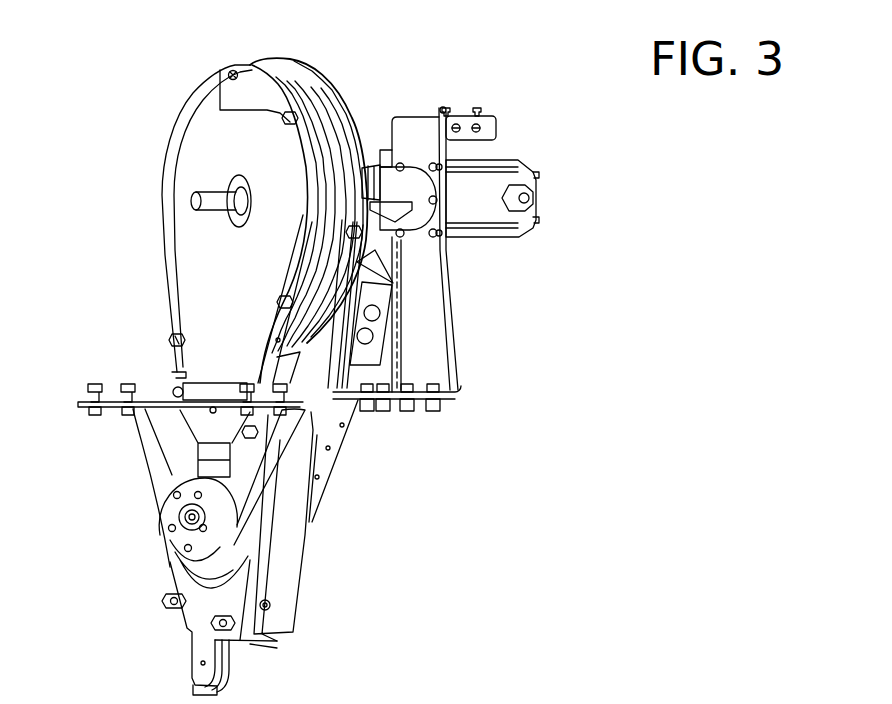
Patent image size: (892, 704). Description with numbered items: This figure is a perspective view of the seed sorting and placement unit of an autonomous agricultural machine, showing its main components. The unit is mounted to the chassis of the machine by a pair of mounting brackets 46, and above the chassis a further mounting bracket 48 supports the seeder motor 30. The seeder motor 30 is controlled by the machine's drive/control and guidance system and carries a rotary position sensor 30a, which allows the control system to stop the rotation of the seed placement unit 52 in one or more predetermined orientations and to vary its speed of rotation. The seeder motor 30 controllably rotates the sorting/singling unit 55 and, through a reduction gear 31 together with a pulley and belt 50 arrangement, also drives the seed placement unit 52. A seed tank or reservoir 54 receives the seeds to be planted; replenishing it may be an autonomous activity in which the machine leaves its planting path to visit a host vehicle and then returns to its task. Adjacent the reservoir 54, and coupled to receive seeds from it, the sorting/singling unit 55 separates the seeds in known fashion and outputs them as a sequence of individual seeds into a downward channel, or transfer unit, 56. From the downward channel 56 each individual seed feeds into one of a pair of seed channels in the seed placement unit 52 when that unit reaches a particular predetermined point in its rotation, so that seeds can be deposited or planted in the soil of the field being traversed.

The seeder motor 30 is at (496, 189).
The rotary position sensor 30a is at (470, 190).
The reduction gear 31 is at (402, 183).
The mounting brackets 46 is at (153, 452).
The mounting bracket 48 is at (417, 352).
The belt 50 is at (328, 386).
The seed placement unit 52 is at (310, 568).
The seed tank or reservoir 54 is at (380, 163).
The sorting/singling unit 55 is at (232, 100).
The downward channel (transfer unit) 56 is at (208, 467).